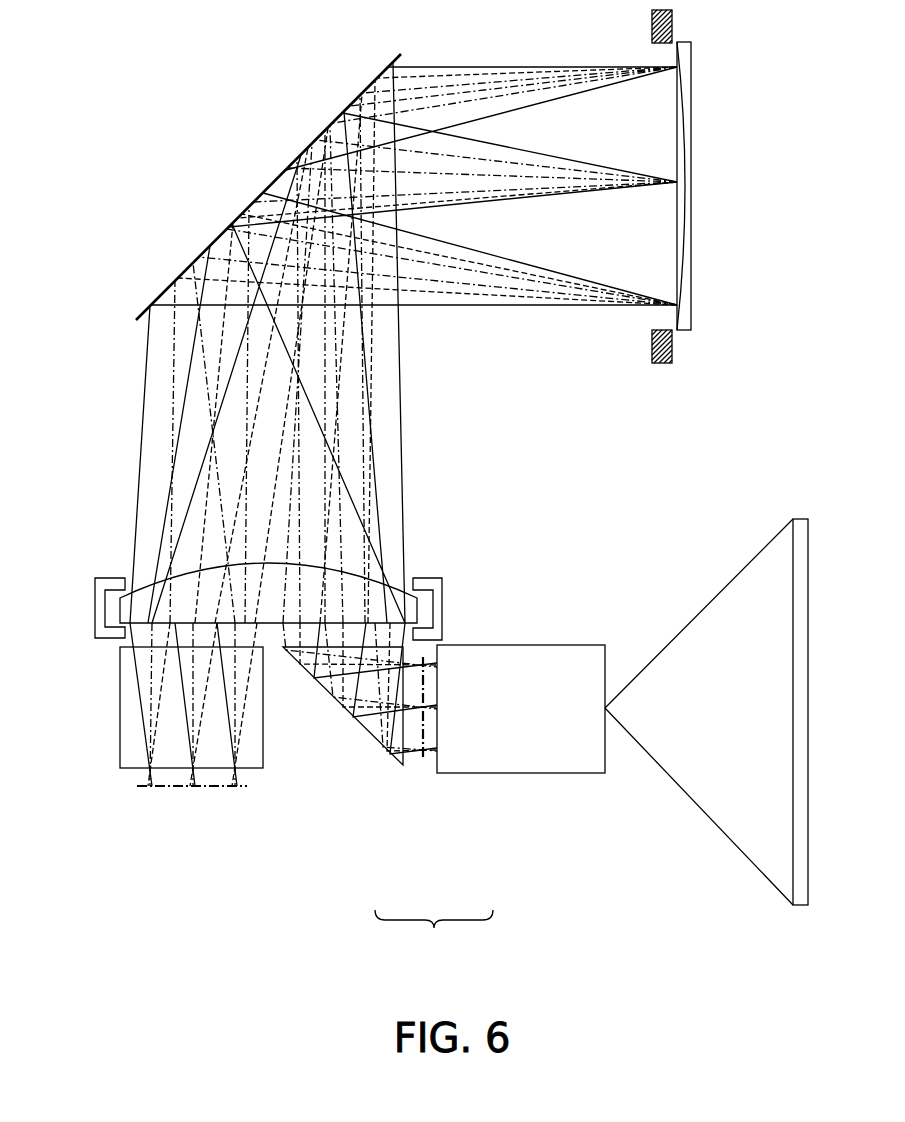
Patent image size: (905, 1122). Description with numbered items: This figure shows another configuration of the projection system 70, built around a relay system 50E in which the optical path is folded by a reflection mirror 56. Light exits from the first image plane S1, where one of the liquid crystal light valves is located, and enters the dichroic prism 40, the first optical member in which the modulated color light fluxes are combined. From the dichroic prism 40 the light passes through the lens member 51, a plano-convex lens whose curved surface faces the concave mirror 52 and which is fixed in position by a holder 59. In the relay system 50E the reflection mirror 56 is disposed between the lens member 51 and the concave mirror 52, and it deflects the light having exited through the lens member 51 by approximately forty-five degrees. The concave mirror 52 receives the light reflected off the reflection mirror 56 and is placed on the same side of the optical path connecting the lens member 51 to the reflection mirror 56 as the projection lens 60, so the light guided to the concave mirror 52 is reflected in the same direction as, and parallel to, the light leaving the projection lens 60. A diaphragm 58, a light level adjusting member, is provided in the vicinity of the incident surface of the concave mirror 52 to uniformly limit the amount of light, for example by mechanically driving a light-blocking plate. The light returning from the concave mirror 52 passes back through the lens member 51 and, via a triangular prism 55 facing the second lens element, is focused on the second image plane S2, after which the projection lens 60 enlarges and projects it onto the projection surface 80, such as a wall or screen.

The dichroic prism 40 is at (125, 703).
The lens member 51 is at (143, 597).
The concave mirror 52 is at (686, 55).
The triangular prism 55 is at (370, 725).
The reflection mirror 56 is at (367, 88).
The diaphragm 58 is at (652, 28).
The holder 59 is at (100, 605).
The projection lens 60 is at (520, 760).
The projection system 70 is at (434, 932).
The projection surface 80 is at (800, 519).
The relay system 50E is at (389, 840).
The first image plane S1 is at (190, 790).
The second image plane S2 is at (420, 765).